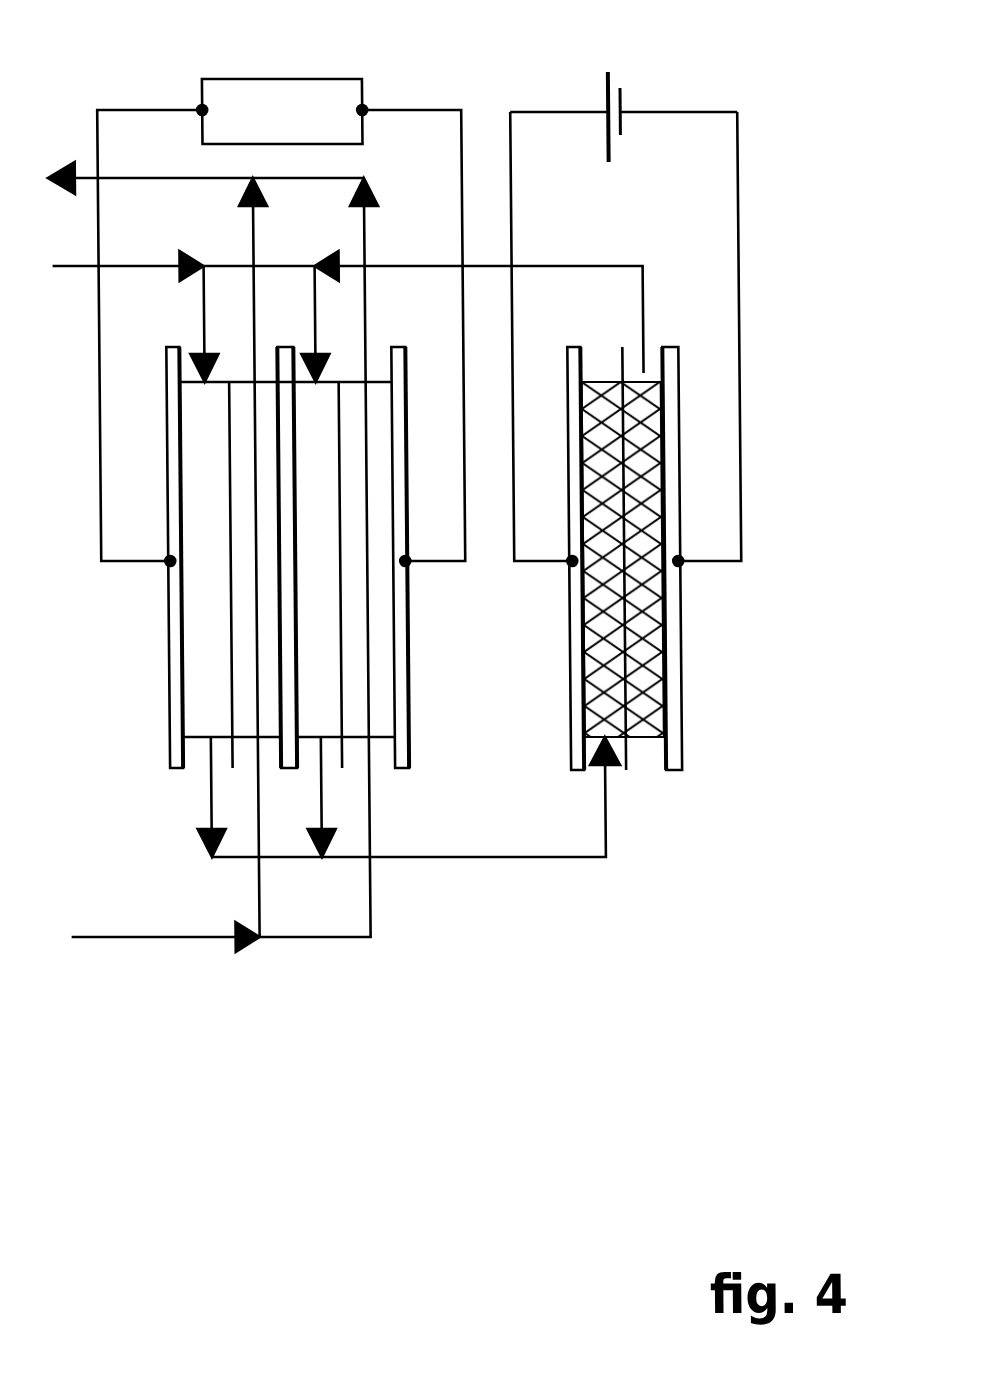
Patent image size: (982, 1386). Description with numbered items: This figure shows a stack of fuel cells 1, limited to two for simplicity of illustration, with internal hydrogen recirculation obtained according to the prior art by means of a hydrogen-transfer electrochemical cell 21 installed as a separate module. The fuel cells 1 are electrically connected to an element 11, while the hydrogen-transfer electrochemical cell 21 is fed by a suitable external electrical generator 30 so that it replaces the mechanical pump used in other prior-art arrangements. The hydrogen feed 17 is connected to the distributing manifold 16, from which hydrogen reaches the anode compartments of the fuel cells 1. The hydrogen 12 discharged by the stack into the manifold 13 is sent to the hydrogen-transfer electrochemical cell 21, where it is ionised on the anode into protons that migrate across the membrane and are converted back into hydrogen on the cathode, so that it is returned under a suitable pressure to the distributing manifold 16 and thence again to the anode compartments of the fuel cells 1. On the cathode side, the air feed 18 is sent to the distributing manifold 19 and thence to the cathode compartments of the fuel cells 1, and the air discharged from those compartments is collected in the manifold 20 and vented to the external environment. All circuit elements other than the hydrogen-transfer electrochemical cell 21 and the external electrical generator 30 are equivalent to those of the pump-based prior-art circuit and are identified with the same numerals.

The fuel cell 1 is at (204, 617).
The power supply / voltage source 11 is at (279, 108).
The hydrogen 12 is at (474, 850).
The manifold 13 is at (277, 863).
The distributing manifold 16 is at (220, 260).
The hydrogen feed 17 is at (70, 275).
The air feed 18 is at (178, 948).
The distributing manifold 19 is at (310, 943).
The manifold 20 is at (292, 180).
The hydrogen-transfer electrochemical cell 21 is at (643, 768).
The external electrical generator 30 is at (618, 70).